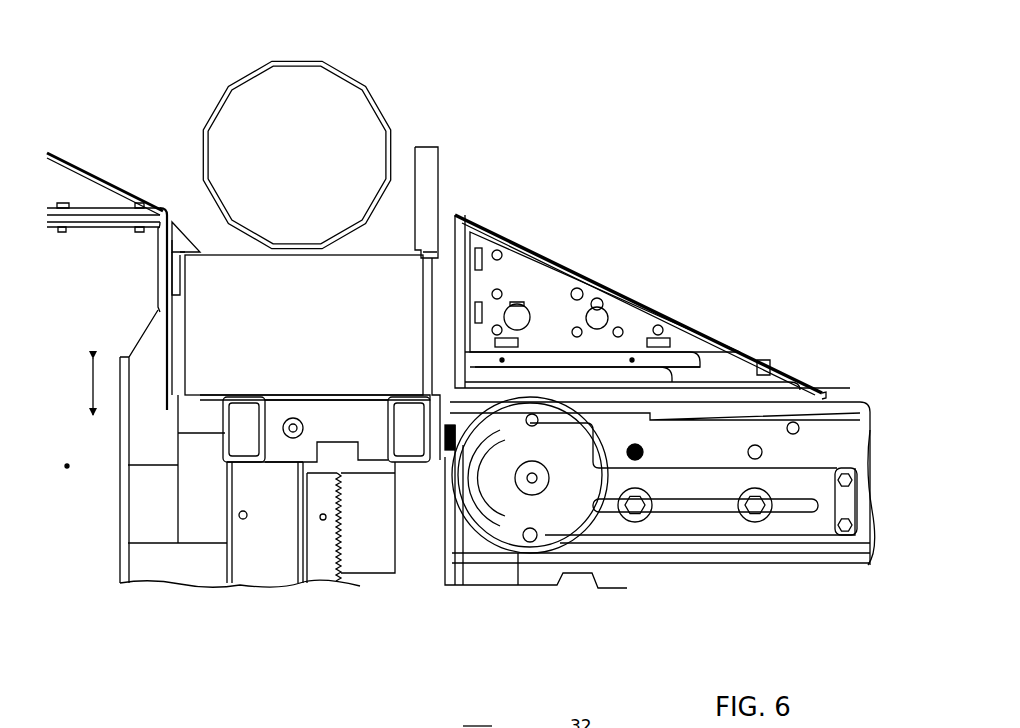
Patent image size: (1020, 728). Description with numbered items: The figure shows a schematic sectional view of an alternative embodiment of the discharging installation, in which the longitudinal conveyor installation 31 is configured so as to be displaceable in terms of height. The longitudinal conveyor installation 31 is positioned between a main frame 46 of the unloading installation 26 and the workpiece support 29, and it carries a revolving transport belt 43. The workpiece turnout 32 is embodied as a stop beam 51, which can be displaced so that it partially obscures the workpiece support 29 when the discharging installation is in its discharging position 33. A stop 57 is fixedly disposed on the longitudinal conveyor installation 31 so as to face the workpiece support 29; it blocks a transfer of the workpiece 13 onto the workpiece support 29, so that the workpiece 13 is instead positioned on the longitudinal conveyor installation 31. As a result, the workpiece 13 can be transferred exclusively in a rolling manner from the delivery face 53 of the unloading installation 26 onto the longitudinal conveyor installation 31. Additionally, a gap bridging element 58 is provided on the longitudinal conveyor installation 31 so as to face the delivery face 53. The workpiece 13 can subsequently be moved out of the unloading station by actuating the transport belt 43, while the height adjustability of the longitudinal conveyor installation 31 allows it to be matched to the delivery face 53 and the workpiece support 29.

The workpiece 13 is at (328, 62).
The delivery face 53 is at (98, 153).
The gap bridging element 58 is at (185, 233).
The stop 57 is at (427, 173).
The transport belt 43 is at (370, 253).
The main frame 46 is at (120, 533).
The unloading installation 26 is at (66, 468).
The longitudinal conveyor installation 31 is at (204, 590).
The discharging position 33 is at (629, 251).
The stop beam 51 is at (636, 325).
The workpiece turnout 32 is at (758, 324).
The workpiece support 29 is at (858, 386).